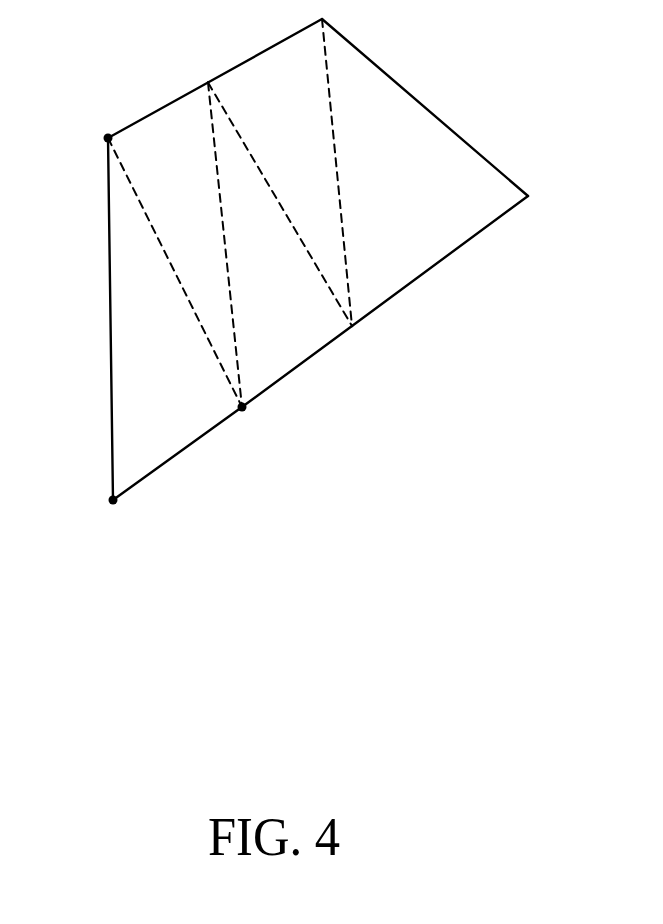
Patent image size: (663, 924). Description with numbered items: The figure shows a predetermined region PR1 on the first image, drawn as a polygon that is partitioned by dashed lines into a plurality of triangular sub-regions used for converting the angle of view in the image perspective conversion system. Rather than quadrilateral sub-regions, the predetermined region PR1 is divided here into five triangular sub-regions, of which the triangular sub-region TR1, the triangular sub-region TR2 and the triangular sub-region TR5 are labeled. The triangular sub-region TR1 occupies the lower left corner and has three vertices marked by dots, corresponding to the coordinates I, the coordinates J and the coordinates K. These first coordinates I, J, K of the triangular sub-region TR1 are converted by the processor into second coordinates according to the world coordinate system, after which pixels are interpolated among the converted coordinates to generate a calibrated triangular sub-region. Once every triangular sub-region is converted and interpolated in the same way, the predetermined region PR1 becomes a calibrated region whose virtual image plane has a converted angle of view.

The predetermined region PR1 is at (280, 279).
The triangular sub-region TR1 is at (135, 348).
The triangular sub-region TR2 is at (167, 130).
The triangular sub-region TR5 is at (425, 233).
The coordinates I is at (97, 137).
The coordinates J is at (250, 424).
The coordinates K is at (106, 518).